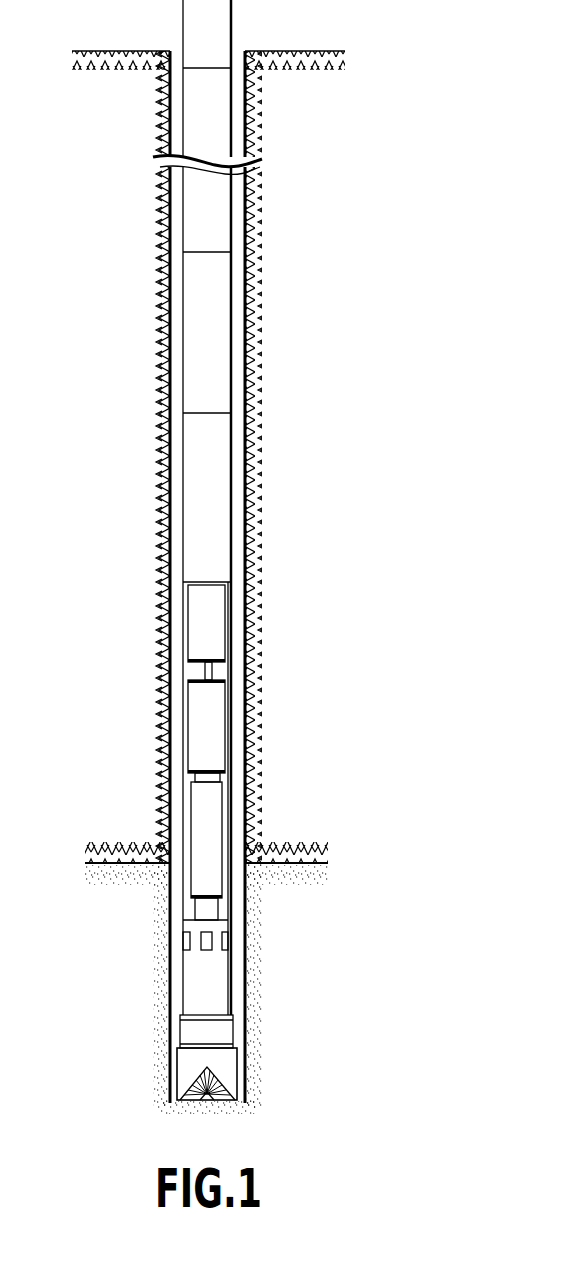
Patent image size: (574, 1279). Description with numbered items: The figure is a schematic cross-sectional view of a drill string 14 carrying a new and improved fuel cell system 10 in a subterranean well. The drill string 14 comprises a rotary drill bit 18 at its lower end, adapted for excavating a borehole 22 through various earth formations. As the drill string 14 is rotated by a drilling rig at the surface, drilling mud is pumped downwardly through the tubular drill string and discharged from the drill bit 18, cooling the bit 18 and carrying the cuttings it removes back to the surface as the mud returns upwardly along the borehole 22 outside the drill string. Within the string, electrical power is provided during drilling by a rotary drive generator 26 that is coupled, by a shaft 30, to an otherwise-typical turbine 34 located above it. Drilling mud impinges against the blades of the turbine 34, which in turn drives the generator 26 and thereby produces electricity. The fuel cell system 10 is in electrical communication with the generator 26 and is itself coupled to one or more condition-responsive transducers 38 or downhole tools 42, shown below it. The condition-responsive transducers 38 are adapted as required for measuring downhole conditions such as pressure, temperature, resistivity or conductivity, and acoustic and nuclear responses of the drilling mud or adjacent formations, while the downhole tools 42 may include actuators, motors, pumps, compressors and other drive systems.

The fuel cell system 10 is at (207, 830).
The drill string 14 is at (193, 330).
The rotary drill bit 18 is at (183, 1070).
The borehole 22 is at (177, 437).
The rotary drive generator 26 is at (200, 733).
The shaft 30 is at (207, 677).
The turbine 34 is at (198, 617).
The condition-responsive transducers 38 is at (183, 940).
The downhole tools 42 is at (205, 950).